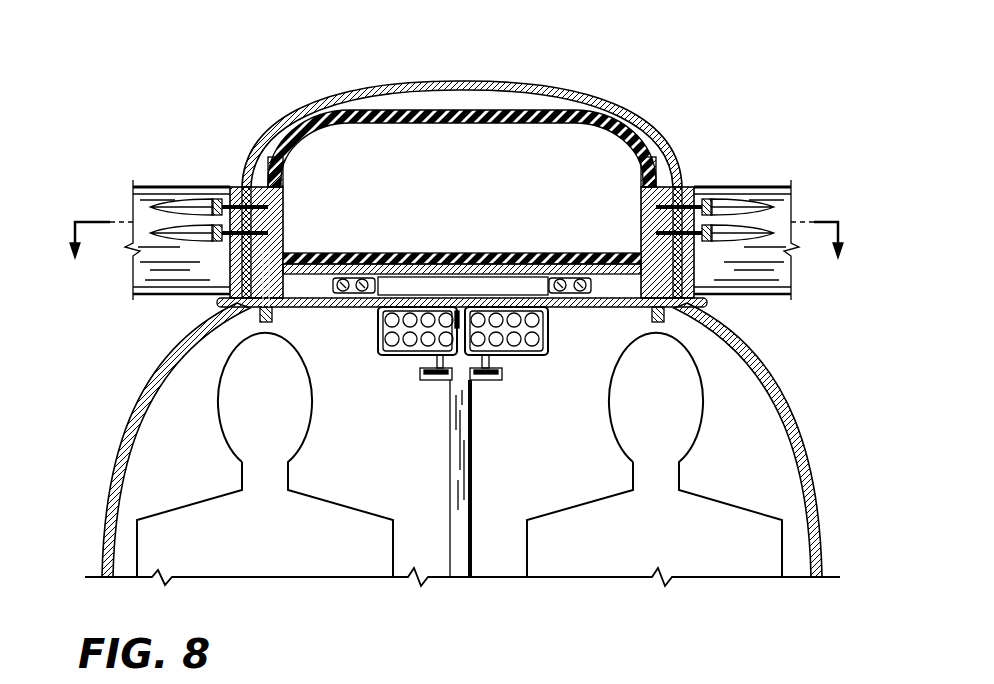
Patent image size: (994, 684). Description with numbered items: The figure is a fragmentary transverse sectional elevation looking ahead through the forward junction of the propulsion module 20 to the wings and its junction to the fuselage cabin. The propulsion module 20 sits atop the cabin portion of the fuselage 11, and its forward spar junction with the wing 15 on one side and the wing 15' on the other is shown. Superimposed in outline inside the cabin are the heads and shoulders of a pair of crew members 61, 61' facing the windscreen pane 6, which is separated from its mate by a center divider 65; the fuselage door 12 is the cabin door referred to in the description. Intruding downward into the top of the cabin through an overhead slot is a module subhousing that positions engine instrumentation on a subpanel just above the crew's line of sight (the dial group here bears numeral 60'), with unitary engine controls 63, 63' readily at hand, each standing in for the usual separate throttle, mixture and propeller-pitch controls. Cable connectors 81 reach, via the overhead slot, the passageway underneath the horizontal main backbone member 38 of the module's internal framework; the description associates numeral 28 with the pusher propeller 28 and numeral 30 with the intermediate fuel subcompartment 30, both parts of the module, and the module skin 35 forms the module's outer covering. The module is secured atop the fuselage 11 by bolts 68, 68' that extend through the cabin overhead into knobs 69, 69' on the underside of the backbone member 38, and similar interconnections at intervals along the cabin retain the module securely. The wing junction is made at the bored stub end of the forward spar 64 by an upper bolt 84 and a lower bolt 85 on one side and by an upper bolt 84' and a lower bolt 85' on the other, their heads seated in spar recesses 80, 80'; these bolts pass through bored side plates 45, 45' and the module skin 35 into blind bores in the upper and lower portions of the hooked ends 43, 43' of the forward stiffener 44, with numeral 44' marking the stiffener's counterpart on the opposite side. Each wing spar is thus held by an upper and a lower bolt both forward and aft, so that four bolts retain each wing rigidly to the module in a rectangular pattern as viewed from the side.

The windscreen pane 6 is at (773, 492).
The fuselage 11 is at (790, 374).
The fuselage door 12 is at (743, 438).
The wing 15 is at (756, 127).
The wing 15' is at (178, 132).
The propulsion module 20 is at (638, 98).
The pusher propeller 28 is at (502, 252).
The intermediate fuel subcompartment 30 is at (412, 124).
The module skin 35 is at (327, 100).
The main backbone member 38 is at (326, 307).
The hooked end 43 is at (618, 144).
The hooked end 43' is at (287, 144).
The forward stiffener 44 is at (782, 209).
The housing 44' is at (134, 214).
The bored side plate 45 is at (683, 176).
The bored side plate 45' is at (247, 183).
The lamp unit 60' is at (445, 463).
The crew member 61 is at (654, 486).
The crew member 61' is at (265, 483).
The unitary engine control 63 is at (507, 496).
The unitary engine control 63' is at (444, 493).
The forward spar 64 is at (523, 357).
The center divider 65 is at (472, 545).
The bolt 68 is at (730, 332).
The bolt 68' is at (189, 321).
The knob 69 is at (575, 340).
The knob 69' is at (347, 348).
The spar recess 80 is at (779, 209).
The spar recess 80' is at (148, 262).
The cable connector 81 is at (393, 108).
The upper bolt 84 is at (704, 169).
The upper bolt 84' is at (222, 176).
The lower bolt 85 is at (532, 303).
The lower bolt 85' is at (164, 315).